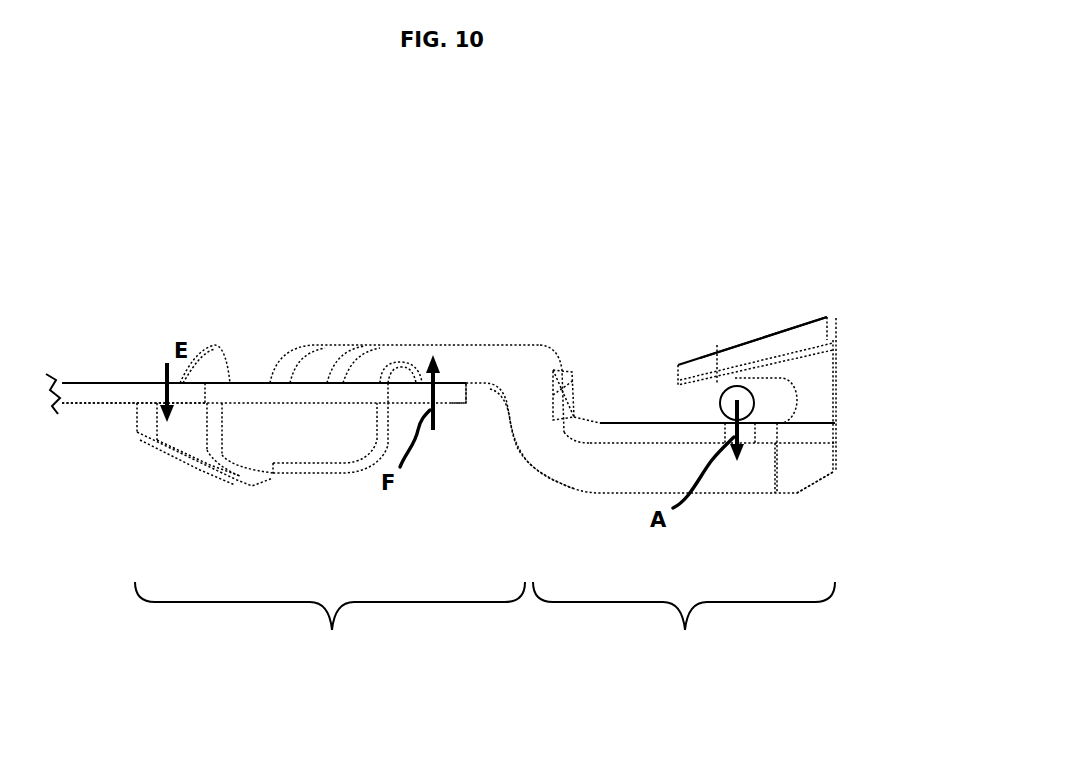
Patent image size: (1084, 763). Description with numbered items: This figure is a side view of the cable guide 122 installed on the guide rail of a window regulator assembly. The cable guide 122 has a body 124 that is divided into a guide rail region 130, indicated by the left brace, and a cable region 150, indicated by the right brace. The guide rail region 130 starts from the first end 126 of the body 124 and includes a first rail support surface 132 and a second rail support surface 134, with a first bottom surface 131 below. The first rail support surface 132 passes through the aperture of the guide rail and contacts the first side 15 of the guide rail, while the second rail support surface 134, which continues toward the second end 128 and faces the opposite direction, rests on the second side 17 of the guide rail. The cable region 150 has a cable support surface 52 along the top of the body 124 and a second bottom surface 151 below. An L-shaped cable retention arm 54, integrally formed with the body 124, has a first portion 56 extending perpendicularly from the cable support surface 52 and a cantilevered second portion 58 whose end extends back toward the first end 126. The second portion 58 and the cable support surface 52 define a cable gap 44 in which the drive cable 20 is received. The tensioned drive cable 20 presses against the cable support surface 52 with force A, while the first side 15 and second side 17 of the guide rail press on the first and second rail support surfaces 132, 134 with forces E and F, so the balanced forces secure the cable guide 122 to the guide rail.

The cable guide 122 is at (351, 219).
The second side of the guide rail 17 is at (90, 384).
The first side of the guide rail 15 is at (62, 406).
The first rail support surface 132 is at (147, 405).
The first end of the body 126 is at (133, 426).
The first bottom surface 131 is at (296, 474).
The second rail support surface 134 is at (458, 408).
The body 124 is at (508, 355).
The second bottom surface 151 is at (619, 495).
The cable support surface 52 is at (668, 421).
The second portion of the cable retention arm 58 is at (763, 364).
The cable retention arm 54 is at (820, 348).
The cable gap 44 is at (786, 396).
The first portion of the cable retention arm 56 is at (820, 402).
The second end of the body 128 is at (835, 430).
The drive cable 20 is at (745, 406).
The guide rail region 130 is at (330, 627).
The cable region 150 is at (684, 627).